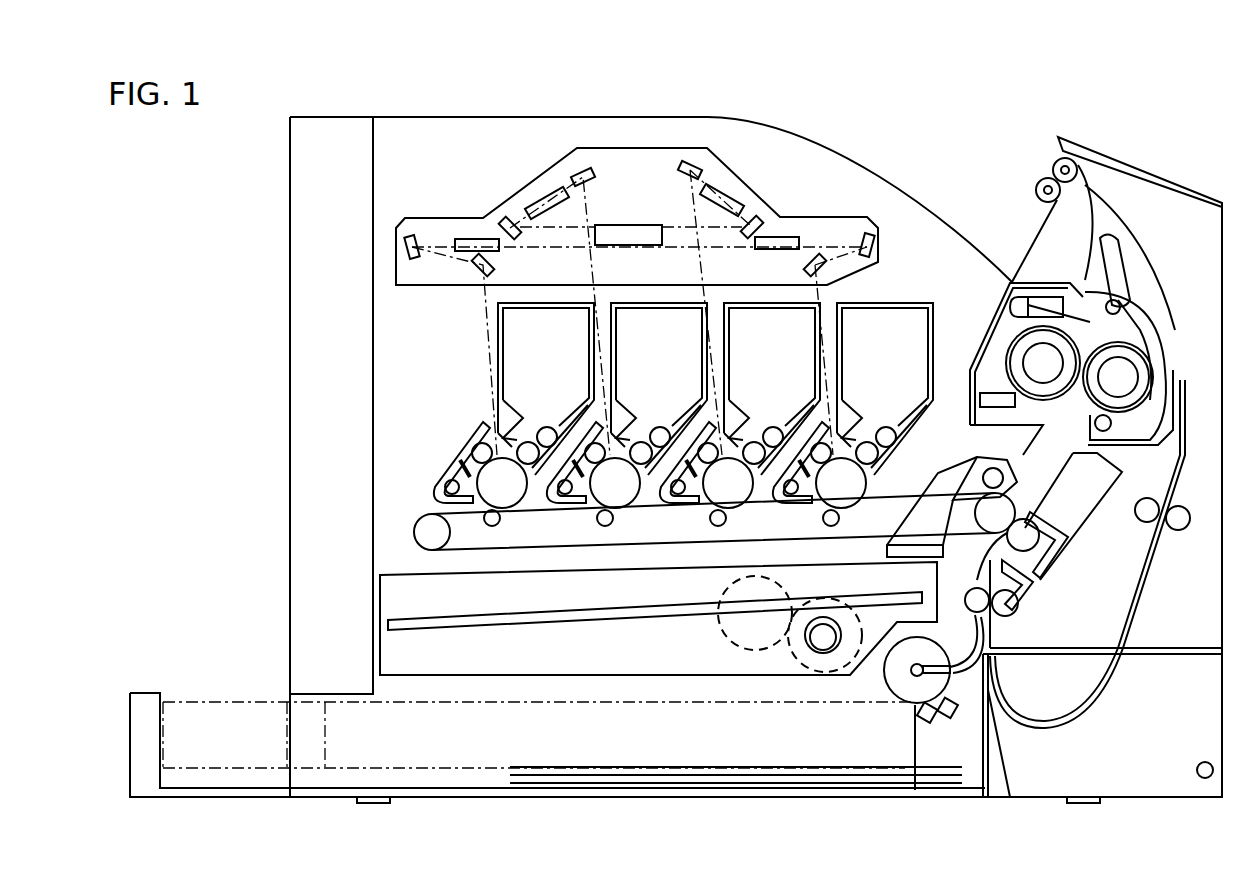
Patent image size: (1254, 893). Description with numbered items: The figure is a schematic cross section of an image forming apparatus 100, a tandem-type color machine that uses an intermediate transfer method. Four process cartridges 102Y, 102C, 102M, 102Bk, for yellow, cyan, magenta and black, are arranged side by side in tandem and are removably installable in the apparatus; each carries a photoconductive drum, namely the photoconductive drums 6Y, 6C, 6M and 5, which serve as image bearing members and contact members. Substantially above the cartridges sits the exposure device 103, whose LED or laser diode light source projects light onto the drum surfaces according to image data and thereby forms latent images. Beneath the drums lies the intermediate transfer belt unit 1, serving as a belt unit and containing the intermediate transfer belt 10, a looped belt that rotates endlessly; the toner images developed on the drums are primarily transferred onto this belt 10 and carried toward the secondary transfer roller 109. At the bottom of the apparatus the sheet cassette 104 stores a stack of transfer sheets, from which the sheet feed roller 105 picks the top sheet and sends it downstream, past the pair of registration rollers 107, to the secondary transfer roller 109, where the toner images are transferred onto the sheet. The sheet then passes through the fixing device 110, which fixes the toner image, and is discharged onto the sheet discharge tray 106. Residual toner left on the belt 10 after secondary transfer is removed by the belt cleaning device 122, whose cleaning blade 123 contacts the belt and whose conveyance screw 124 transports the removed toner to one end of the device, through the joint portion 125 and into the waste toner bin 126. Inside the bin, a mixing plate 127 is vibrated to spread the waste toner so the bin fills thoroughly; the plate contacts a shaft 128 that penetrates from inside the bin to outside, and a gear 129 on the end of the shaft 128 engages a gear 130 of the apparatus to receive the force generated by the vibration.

The image forming apparatus 100 is at (262, 175).
The intermediate transfer belt unit 1 is at (404, 546).
The intermediate transfer belt 10 is at (520, 552).
The photoconductive drum 5 is at (841, 483).
The photoconductive drum 6Y is at (502, 483).
The photoconductive drum 6C is at (615, 483).
The photoconductive drum 6M is at (728, 483).
The process cartridge 102Y is at (548, 318).
The process cartridge 102C is at (661, 318).
The process cartridge 102M is at (774, 318).
The process cartridge 102Bk is at (911, 318).
The exposure device 103 is at (560, 182).
The sheet cassette 104 is at (828, 750).
The sheet feed roller 105 is at (897, 683).
The sheet discharge tray 106 is at (906, 193).
The pair of registration rollers 107 is at (1016, 614).
The secondary transfer roller 109 is at (1033, 565).
The fixing device 110 is at (1142, 318).
The belt cleaning device 122 is at (1120, 474).
The cleaning blade 123 is at (1050, 530).
The conveyance screw 124 is at (990, 462).
The joint portion 125 is at (932, 518).
The waste toner bin 126 is at (512, 660).
The mixing plate 127 is at (600, 618).
The shaft 128 is at (823, 648).
The gear 129 is at (795, 652).
The gear 130 is at (742, 650).